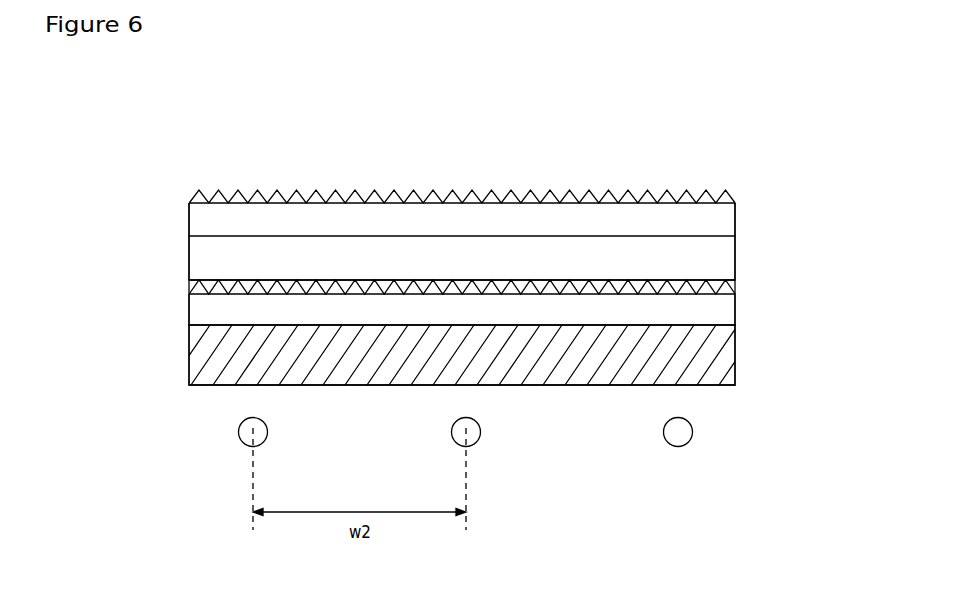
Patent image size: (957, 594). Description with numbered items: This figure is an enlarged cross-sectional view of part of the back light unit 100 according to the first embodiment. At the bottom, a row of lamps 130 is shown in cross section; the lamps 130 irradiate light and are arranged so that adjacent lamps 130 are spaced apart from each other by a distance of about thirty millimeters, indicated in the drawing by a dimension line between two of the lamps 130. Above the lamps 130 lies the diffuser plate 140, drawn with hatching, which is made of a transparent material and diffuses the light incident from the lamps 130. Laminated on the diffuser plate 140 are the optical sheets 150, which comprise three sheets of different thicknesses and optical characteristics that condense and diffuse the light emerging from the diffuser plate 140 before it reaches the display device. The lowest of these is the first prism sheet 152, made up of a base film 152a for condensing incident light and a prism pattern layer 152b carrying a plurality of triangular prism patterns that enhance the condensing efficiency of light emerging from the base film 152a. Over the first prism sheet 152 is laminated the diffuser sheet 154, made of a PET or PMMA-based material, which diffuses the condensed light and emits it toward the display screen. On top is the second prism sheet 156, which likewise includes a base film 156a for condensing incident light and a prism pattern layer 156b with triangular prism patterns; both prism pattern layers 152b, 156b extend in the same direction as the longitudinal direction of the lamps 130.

The back light unit 100 is at (625, 127).
The lamp 130 is at (692, 430).
The diffuser plate 140 is at (735, 353).
The optical sheets 150 is at (806, 212).
The first prism sheet 152 is at (105, 276).
The base film 152a is at (189, 314).
The prism pattern layer 152b is at (194, 282).
The diffuser sheet 154 is at (735, 252).
The second prism sheet 156 is at (105, 186).
The base film 156a is at (189, 224).
The prism pattern layer 156b is at (194, 193).